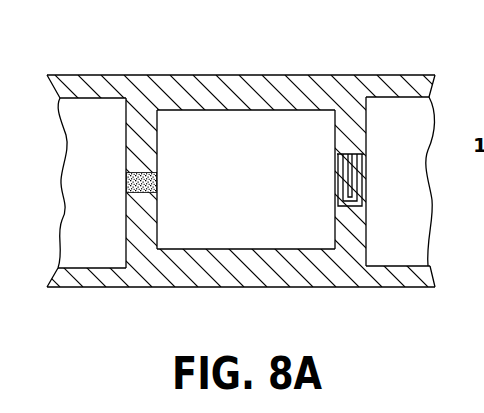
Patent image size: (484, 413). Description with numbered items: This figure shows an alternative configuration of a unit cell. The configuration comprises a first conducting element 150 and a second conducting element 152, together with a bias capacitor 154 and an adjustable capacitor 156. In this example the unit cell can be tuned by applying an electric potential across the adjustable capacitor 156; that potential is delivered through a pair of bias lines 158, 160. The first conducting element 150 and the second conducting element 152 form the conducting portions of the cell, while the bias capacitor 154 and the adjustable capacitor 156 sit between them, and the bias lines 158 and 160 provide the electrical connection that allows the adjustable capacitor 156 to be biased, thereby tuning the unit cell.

The first conducting element 150 is at (240, 88).
The second conducting element 152 is at (259, 268).
The bias capacitor 154 is at (357, 173).
The adjustable capacitor 156 is at (126, 185).
The bias line 158 is at (98, 84).
The bias line 160 is at (92, 278).